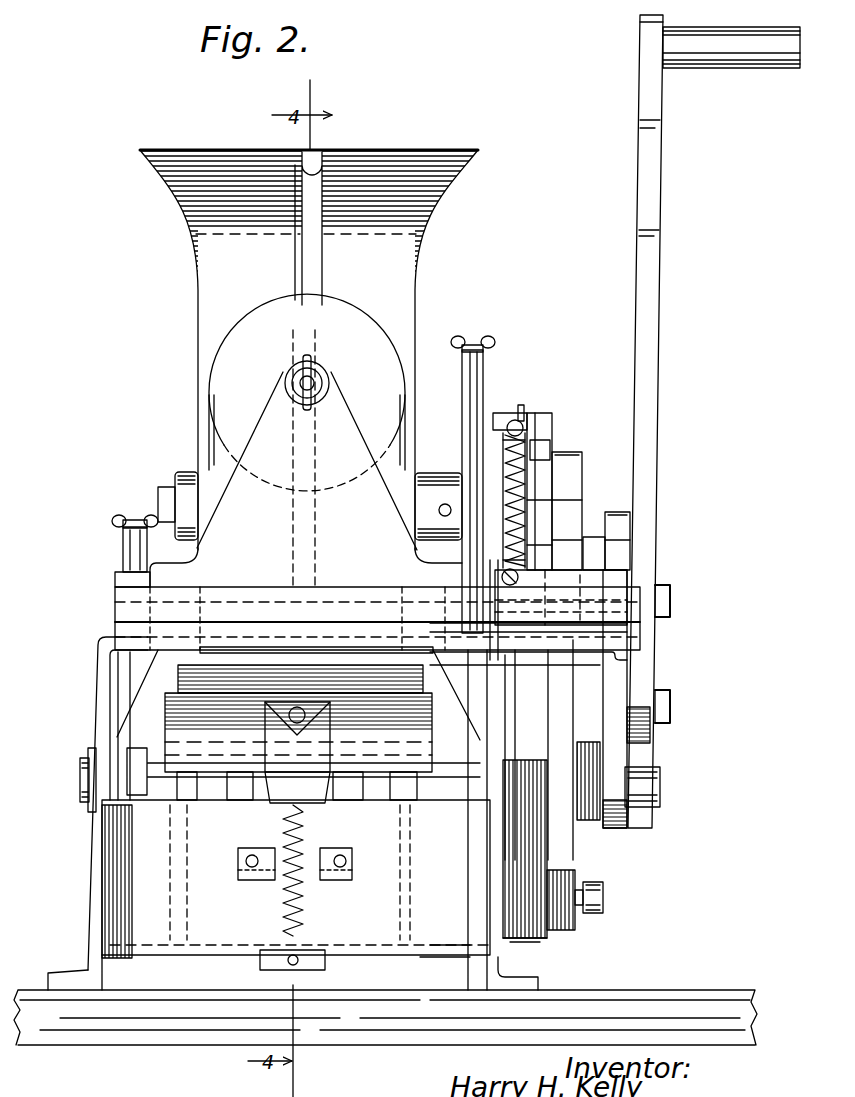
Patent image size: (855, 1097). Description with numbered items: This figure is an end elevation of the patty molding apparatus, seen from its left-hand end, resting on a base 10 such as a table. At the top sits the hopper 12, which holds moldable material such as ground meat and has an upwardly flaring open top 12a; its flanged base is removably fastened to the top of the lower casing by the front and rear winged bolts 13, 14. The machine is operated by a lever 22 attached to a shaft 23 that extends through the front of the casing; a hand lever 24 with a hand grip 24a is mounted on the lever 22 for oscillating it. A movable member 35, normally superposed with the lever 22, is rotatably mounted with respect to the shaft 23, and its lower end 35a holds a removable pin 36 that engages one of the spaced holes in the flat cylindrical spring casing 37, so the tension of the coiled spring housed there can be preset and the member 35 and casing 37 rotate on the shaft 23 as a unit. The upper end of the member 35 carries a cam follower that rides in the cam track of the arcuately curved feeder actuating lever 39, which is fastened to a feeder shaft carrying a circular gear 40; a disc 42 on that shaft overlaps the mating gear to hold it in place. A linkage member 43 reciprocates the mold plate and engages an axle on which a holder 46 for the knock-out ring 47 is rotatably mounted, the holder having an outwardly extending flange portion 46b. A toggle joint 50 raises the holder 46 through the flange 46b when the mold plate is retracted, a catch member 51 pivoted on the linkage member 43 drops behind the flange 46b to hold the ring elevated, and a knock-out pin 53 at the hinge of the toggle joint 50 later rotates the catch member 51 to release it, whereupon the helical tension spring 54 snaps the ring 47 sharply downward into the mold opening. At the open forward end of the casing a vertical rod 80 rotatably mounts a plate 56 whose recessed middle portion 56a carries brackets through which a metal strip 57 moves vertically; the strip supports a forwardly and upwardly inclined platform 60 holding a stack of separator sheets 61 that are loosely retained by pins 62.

The base 10 is at (188, 1020).
The hopper 12 is at (393, 268).
The upwardly flaring open top 12a is at (418, 152).
The front winged bolt 13 is at (478, 390).
The rear winged bolt 14 is at (123, 545).
The lever 22 is at (612, 680).
The shaft 23 is at (648, 787).
The hand lever 24 is at (647, 301).
The hand grip 24a is at (713, 60).
The movable member 35 is at (577, 487).
The lower end of movable member 35a is at (577, 870).
The removable pin 36 is at (603, 902).
The spring casing 37 is at (523, 938).
The feeder actuating lever 39 is at (540, 505).
The circular gear 40 is at (507, 413).
The disc 42 is at (516, 420).
The linkage member 43 is at (590, 533).
The holder 46 is at (275, 425).
The flange portion 46b is at (615, 583).
The knock-out ring 47 is at (362, 345).
The toggle joint 50 is at (492, 420).
The catch member 51 is at (553, 532).
The knock-out pin 53 is at (557, 435).
The helical tension spring 54 is at (526, 433).
The plate 56 is at (145, 898).
The recessed middle portion 56a is at (182, 937).
The metal strip 57 is at (290, 768).
The platform 60 is at (175, 718).
The separator sheets 61 is at (180, 677).
The pins 62 is at (188, 800).
The vertical rod 80 is at (125, 688).